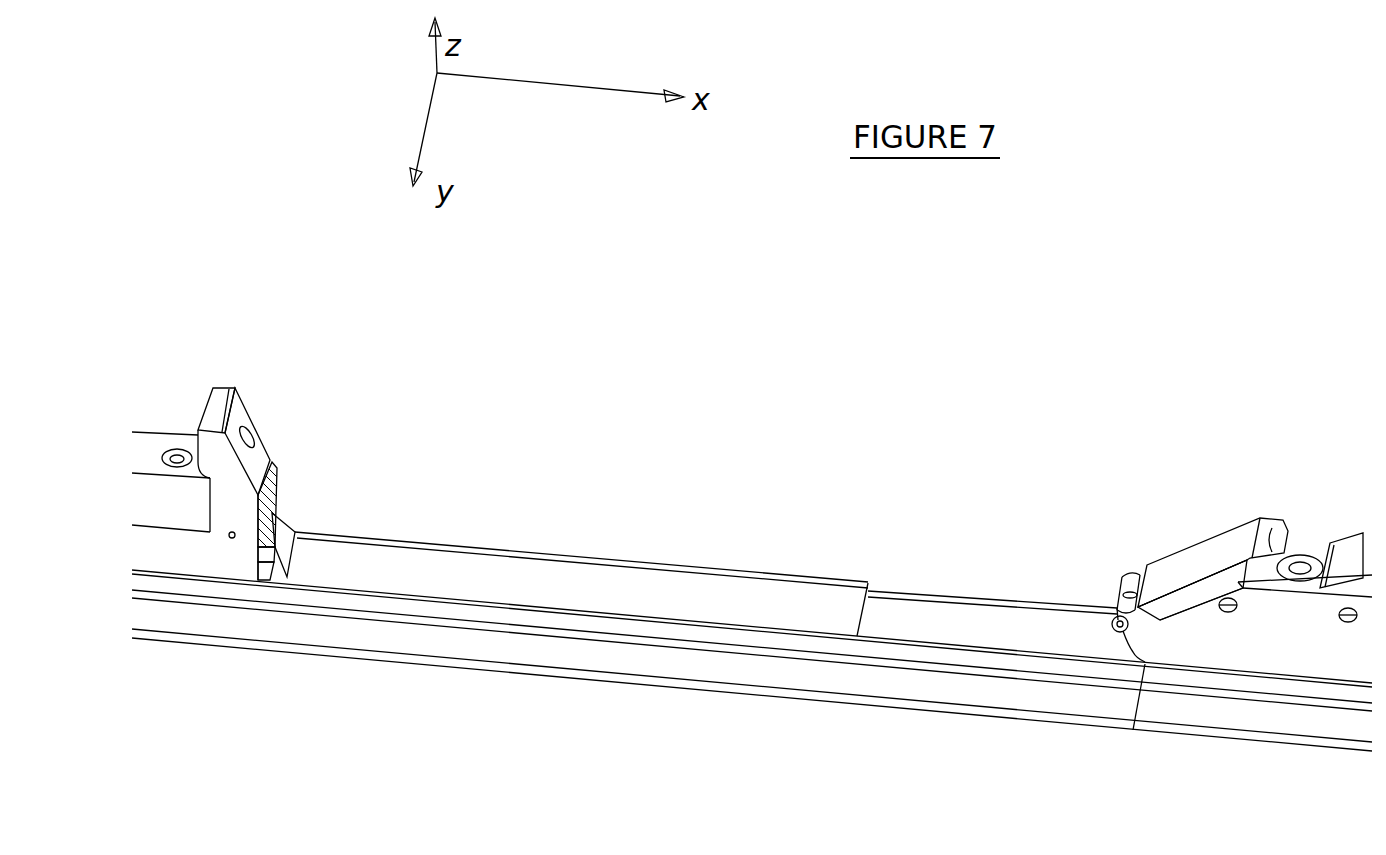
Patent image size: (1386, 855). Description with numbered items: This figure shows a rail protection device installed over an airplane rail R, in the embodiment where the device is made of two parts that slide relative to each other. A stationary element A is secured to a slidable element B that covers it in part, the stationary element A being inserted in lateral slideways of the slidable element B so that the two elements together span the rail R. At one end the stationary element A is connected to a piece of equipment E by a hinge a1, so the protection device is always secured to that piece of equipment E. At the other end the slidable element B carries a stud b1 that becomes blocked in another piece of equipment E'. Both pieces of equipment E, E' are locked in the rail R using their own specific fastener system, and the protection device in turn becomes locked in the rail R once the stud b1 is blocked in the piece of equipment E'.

The rail R is at (663, 653).
The stationary element A is at (963, 625).
The slidable element B is at (445, 570).
The piece of equipment E is at (1255, 465).
The piece of equipment E' is at (294, 425).
The hinge a1 is at (1117, 616).
The stud b1 is at (268, 568).